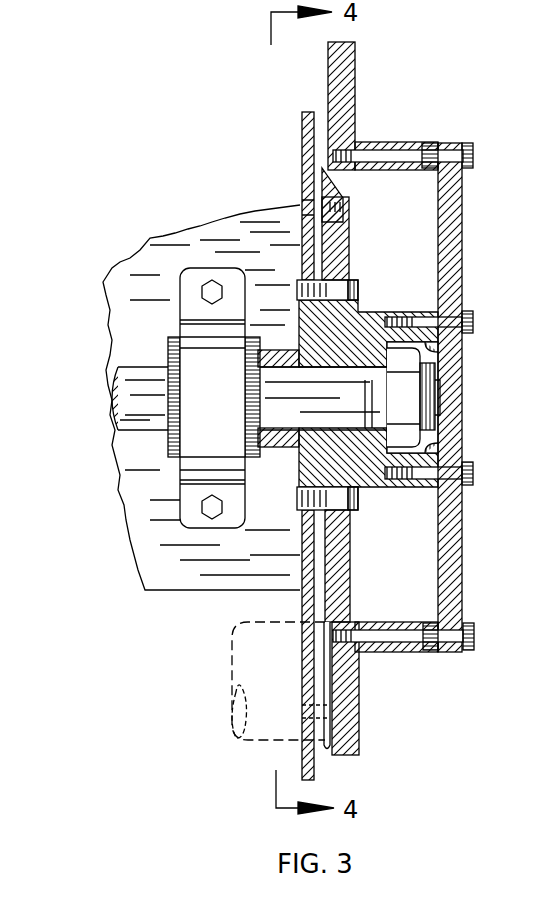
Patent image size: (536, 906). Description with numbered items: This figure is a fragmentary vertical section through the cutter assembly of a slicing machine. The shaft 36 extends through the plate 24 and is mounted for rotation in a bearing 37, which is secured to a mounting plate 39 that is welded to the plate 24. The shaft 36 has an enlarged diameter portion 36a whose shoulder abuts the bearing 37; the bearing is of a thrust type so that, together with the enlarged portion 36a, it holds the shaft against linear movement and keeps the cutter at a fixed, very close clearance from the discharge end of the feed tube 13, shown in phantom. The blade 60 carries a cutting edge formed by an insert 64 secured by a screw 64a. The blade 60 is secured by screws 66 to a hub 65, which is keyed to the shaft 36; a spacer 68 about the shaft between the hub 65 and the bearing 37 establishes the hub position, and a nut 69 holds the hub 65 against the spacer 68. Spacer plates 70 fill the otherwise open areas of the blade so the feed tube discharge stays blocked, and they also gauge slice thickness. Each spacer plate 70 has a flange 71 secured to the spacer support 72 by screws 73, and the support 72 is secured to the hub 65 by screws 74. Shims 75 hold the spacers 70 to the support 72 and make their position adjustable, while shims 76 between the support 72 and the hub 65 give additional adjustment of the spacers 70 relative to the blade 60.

The feed tube 13 is at (236, 674).
The plate 24 is at (302, 135).
The shaft 36 is at (287, 447).
The enlarged diameter portion 36a is at (145, 372).
The bearing 37 is at (224, 402).
The mounting plate 39 is at (142, 572).
The blade 60 is at (349, 234).
The insert 64 is at (336, 188).
The screw 64a is at (320, 206).
The hub 65 is at (373, 466).
The screw 66 is at (358, 290).
The spacer 68 is at (278, 348).
The nut 69 is at (412, 400).
The spacer plate 70 is at (346, 68).
The flange 71 is at (385, 143).
The spacer support 72 is at (455, 245).
The screw 73 is at (474, 158).
The screw 74 is at (473, 322).
The shim 75 is at (428, 142).
The shim 76 is at (437, 346).